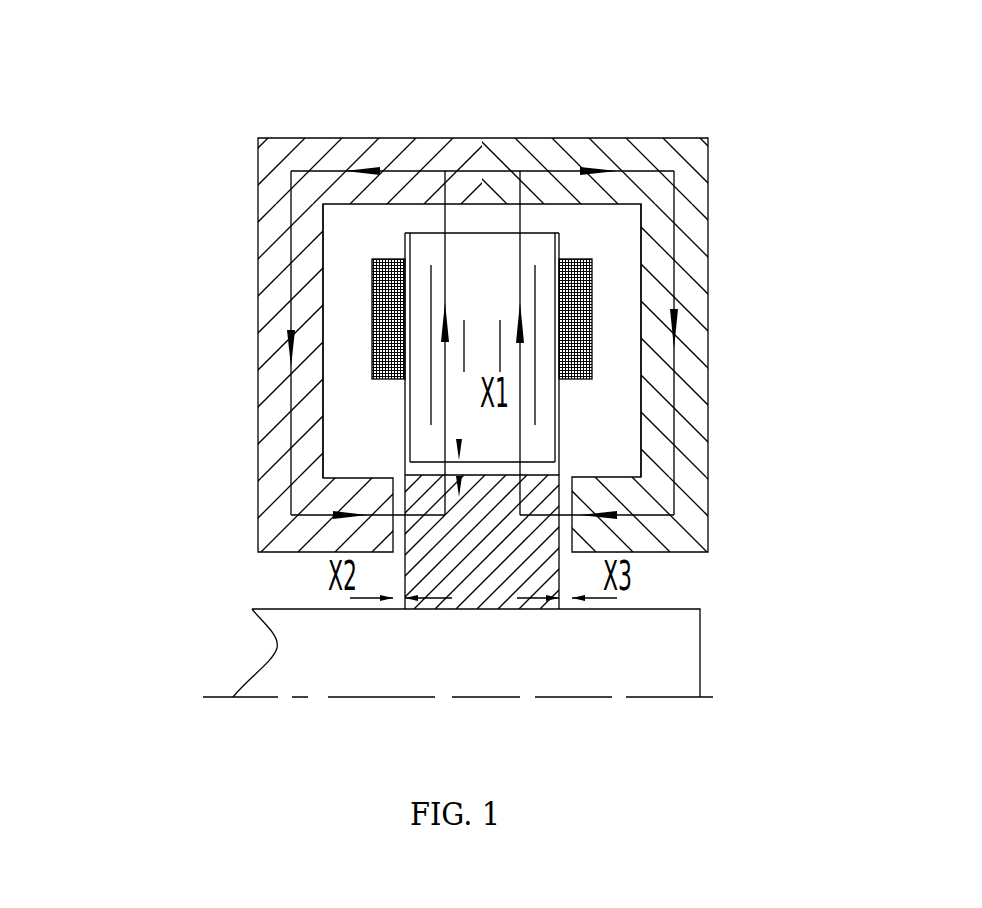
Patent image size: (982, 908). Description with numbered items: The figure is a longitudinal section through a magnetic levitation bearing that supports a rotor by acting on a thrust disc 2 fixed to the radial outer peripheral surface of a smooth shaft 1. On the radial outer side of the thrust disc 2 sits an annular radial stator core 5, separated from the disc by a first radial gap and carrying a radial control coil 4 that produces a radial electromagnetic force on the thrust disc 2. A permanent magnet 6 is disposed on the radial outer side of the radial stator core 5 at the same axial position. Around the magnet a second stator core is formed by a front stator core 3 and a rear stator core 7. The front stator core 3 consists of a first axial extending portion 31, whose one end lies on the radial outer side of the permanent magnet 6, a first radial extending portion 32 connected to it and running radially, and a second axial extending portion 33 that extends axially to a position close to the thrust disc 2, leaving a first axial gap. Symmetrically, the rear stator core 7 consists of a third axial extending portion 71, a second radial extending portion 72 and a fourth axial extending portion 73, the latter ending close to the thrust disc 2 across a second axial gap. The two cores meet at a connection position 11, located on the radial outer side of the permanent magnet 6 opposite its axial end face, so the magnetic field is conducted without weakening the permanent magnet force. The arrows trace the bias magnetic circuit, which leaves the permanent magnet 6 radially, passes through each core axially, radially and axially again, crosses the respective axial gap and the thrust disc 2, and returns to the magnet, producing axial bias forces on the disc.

The smooth shaft 1 is at (290, 668).
The thrust disc 2 is at (448, 560).
The front stator core 3 is at (287, 282).
The first axial extending portion 31 is at (310, 152).
The first radial extending portion 32 is at (277, 410).
The second axial extending portion 33 is at (300, 537).
The radial control coil 4 is at (387, 328).
The radial stator core 5 is at (430, 248).
The permanent magnet 6 is at (477, 223).
The rear stator core 7 is at (680, 318).
The third axial extending portion 71 is at (655, 150).
The second radial extending portion 72 is at (690, 282).
The fourth axial extending portion 73 is at (708, 552).
The connection position 11 is at (433, 203).